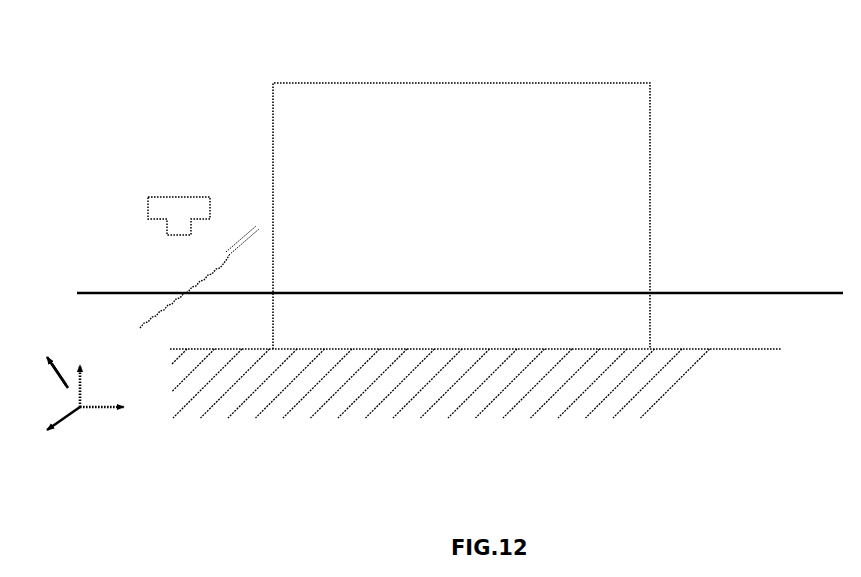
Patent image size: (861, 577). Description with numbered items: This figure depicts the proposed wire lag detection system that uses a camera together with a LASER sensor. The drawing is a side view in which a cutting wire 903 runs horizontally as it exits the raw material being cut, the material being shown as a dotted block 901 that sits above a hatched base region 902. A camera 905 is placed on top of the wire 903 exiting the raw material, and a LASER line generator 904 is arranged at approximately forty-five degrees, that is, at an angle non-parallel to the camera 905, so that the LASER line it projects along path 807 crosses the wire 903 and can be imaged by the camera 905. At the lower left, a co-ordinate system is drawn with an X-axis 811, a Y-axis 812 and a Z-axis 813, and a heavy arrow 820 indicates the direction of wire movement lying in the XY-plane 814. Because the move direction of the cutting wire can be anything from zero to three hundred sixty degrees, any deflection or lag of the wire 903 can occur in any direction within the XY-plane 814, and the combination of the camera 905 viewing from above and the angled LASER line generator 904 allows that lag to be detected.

The object 901 is at (443, 77).
The substrate 902 is at (742, 358).
The wire 903 is at (688, 287).
The LASER line generator 904 is at (243, 220).
The camera 905 is at (152, 195).
The scan path 807 is at (177, 299).
The direction arrow 820 is at (43, 367).
The X-axis 811 is at (59, 430).
The Y-axis 812 is at (86, 378).
The Z-axis 813 is at (125, 409).
The XY-plane 814 is at (45, 386).